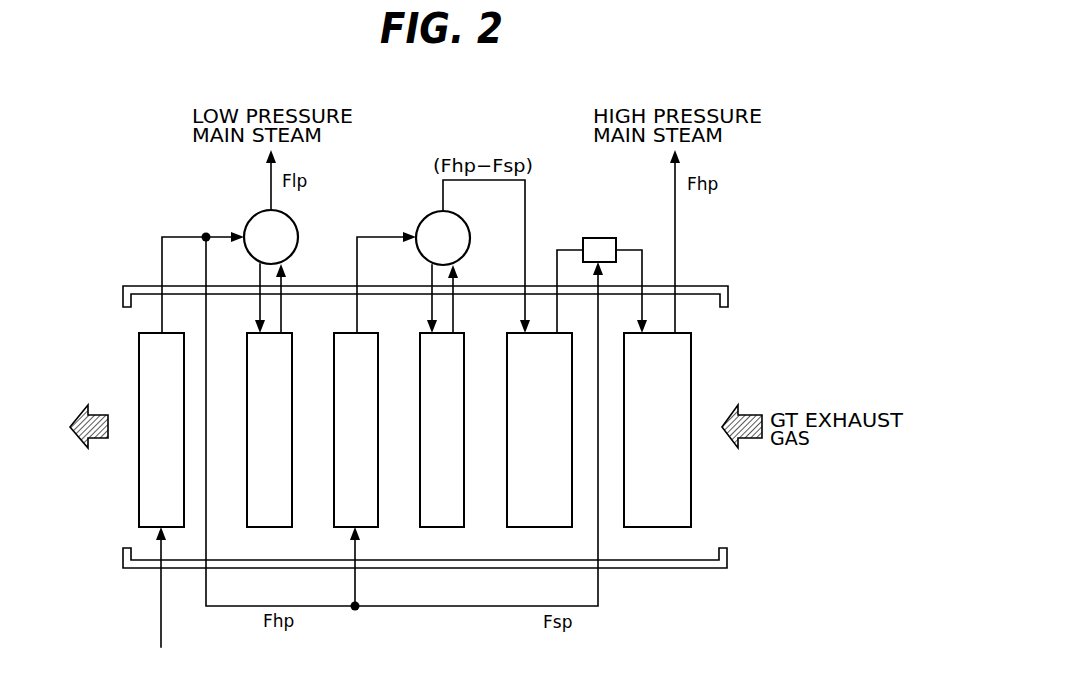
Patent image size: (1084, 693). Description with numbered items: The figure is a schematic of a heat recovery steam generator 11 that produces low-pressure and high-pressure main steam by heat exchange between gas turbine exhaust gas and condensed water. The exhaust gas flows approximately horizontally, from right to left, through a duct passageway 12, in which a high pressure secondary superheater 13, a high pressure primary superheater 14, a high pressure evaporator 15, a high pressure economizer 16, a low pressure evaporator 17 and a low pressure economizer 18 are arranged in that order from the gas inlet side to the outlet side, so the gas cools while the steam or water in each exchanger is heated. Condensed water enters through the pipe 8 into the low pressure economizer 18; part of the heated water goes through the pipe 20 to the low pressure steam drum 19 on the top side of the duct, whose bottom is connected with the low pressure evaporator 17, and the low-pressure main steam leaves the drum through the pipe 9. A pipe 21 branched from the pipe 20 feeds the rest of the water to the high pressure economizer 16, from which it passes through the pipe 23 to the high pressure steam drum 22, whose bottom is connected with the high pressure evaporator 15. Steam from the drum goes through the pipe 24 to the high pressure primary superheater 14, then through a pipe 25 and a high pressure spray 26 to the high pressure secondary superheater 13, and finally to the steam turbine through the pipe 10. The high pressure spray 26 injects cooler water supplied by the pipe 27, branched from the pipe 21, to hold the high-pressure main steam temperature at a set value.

The pipe 8 is at (164, 631).
The pipe 9 is at (268, 166).
The pipe 10 is at (672, 167).
The heat recovery steam generator 11 is at (753, 215).
The duct passageway 12 is at (705, 285).
The high pressure secondary superheater 13 is at (684, 331).
The high pressure primary superheater 14 is at (564, 331).
The high pressure evaporator 15 is at (460, 331).
The high pressure economizer 16 is at (364, 331).
The low pressure evaporator 17 is at (287, 331).
The low pressure economizer 18 is at (168, 331).
The low pressure steam drum 19 is at (288, 218).
The pipe 20 is at (220, 236).
The pipe 21 is at (358, 590).
The high pressure steam drum 22 is at (462, 218).
The pipe 23 is at (385, 236).
The pipe 24 is at (528, 185).
The pipe 25 is at (567, 248).
The high pressure spray 26 is at (601, 237).
The pipe 27 is at (453, 607).